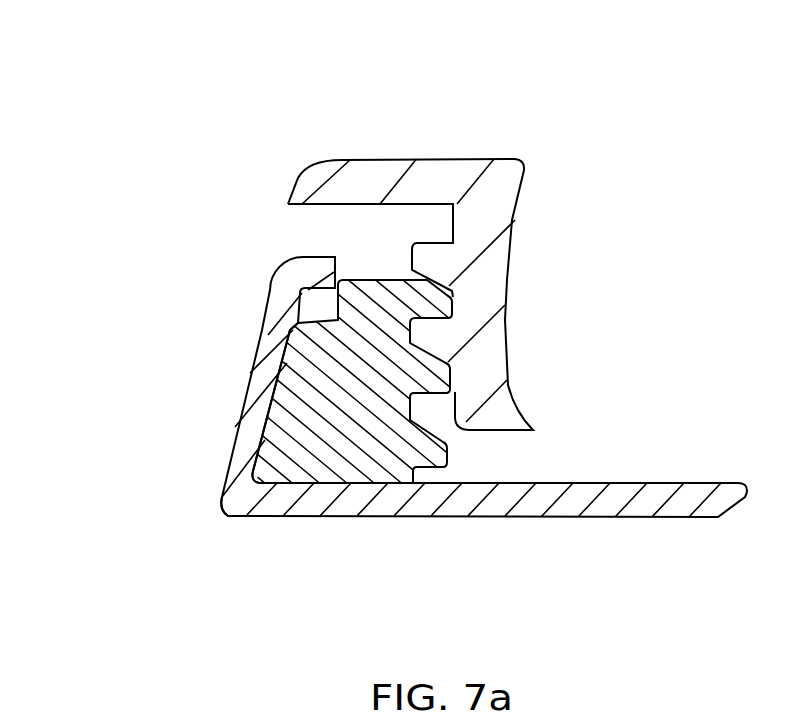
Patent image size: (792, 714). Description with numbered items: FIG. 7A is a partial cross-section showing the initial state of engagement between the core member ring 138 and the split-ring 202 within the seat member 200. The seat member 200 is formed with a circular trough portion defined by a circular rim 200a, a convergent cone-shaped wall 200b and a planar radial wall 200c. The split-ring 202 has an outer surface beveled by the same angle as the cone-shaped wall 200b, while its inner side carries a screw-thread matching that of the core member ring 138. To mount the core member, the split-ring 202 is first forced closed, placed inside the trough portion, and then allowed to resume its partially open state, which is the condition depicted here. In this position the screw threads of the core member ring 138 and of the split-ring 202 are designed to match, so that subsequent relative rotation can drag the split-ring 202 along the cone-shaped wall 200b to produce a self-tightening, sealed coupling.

The core member ring 138 is at (520, 160).
The seat member 200 is at (450, 432).
The circular rim 200a is at (332, 257).
The convergent cone-shaped wall 200b is at (278, 357).
The planar radial wall 200c is at (720, 503).
The split-ring 202 is at (228, 517).